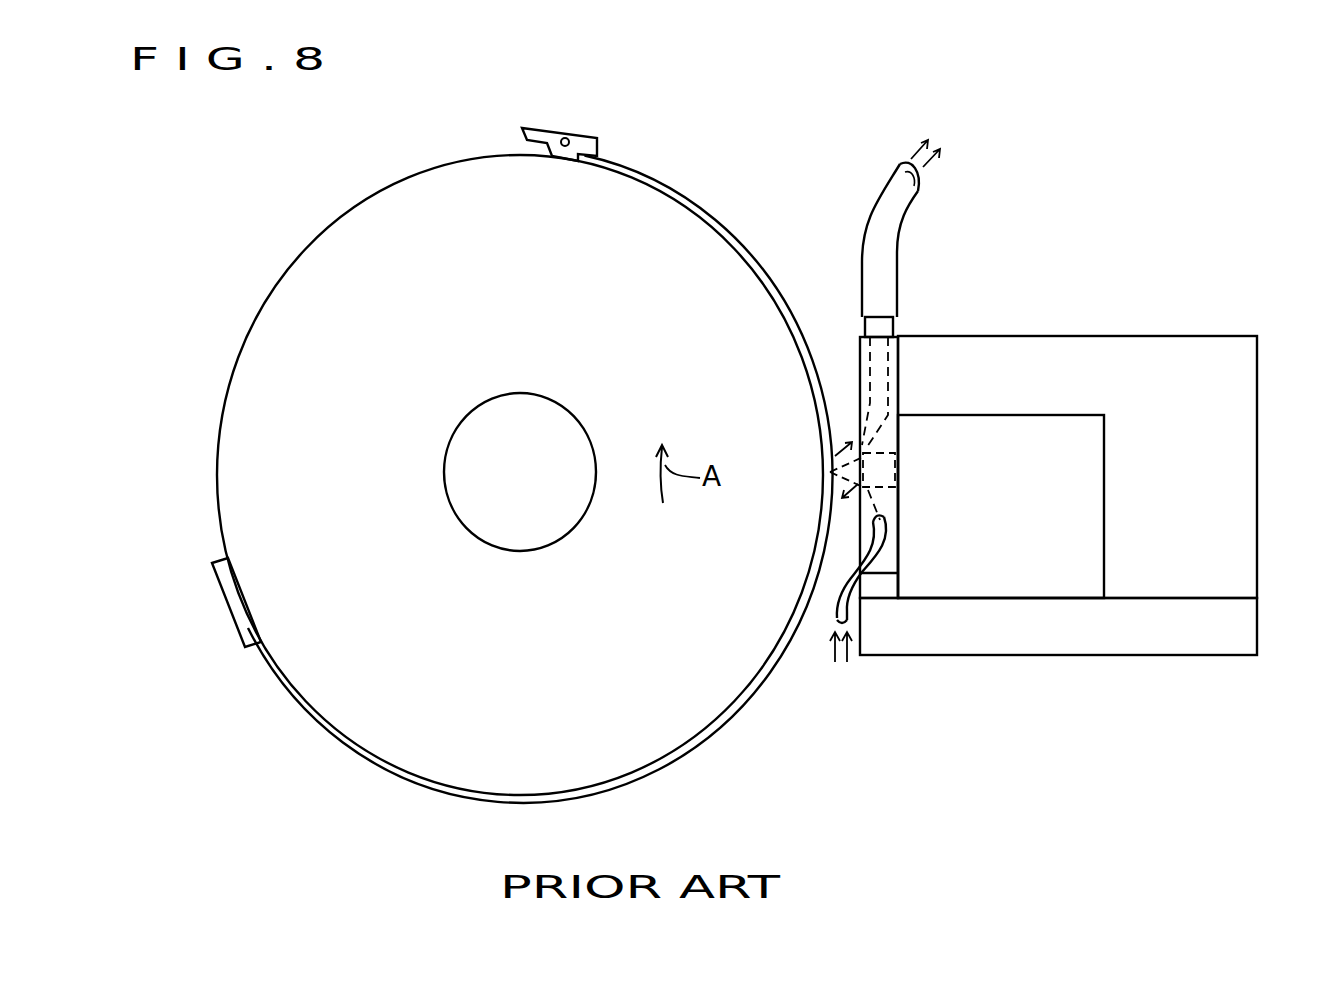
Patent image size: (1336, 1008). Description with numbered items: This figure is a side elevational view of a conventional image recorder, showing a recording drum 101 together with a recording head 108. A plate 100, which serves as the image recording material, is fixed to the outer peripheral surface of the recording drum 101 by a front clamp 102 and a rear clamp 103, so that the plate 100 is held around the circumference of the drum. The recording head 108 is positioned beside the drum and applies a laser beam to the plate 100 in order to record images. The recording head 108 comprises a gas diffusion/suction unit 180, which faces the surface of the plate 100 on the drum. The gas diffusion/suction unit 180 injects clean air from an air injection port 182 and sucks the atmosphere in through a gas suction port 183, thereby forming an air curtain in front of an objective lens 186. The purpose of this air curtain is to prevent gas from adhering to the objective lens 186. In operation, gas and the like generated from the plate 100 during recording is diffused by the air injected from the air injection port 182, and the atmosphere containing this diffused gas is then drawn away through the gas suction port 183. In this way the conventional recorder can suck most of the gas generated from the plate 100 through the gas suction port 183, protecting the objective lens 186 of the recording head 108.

The plate 100 is at (743, 243).
The recording drum 101 is at (397, 197).
The front clamp 102 is at (587, 133).
The rear clamp 103 is at (222, 605).
The recording head 108 is at (1021, 336).
The gas diffusion/suction unit 180 is at (858, 348).
The air injection port 182 is at (860, 500).
The gas suction port 183 is at (860, 428).
The objective lens 186 is at (900, 469).